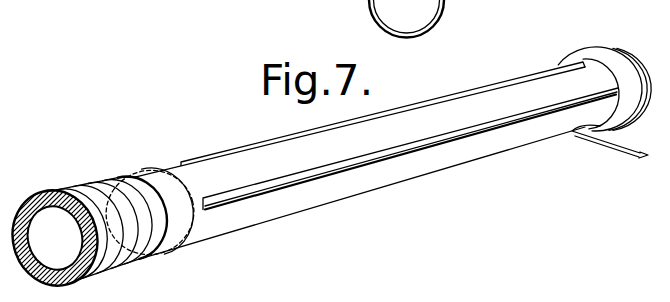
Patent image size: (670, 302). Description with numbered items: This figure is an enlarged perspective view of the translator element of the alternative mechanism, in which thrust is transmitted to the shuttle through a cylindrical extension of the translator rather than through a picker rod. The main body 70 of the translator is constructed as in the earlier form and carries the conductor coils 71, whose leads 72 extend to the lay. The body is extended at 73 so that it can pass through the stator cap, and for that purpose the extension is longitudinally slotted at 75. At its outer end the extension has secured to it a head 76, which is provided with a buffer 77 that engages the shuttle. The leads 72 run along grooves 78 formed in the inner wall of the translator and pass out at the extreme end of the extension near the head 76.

The main body of the translator 70 is at (33, 200).
The conductor coils 71 is at (104, 183).
The leads 72 is at (611, 144).
The extension of the translator body 73 is at (515, 92).
The longitudinal slot 75 is at (420, 143).
The head 76 is at (596, 50).
The buffer 77 is at (643, 63).
The grooves 78 is at (78, 264).